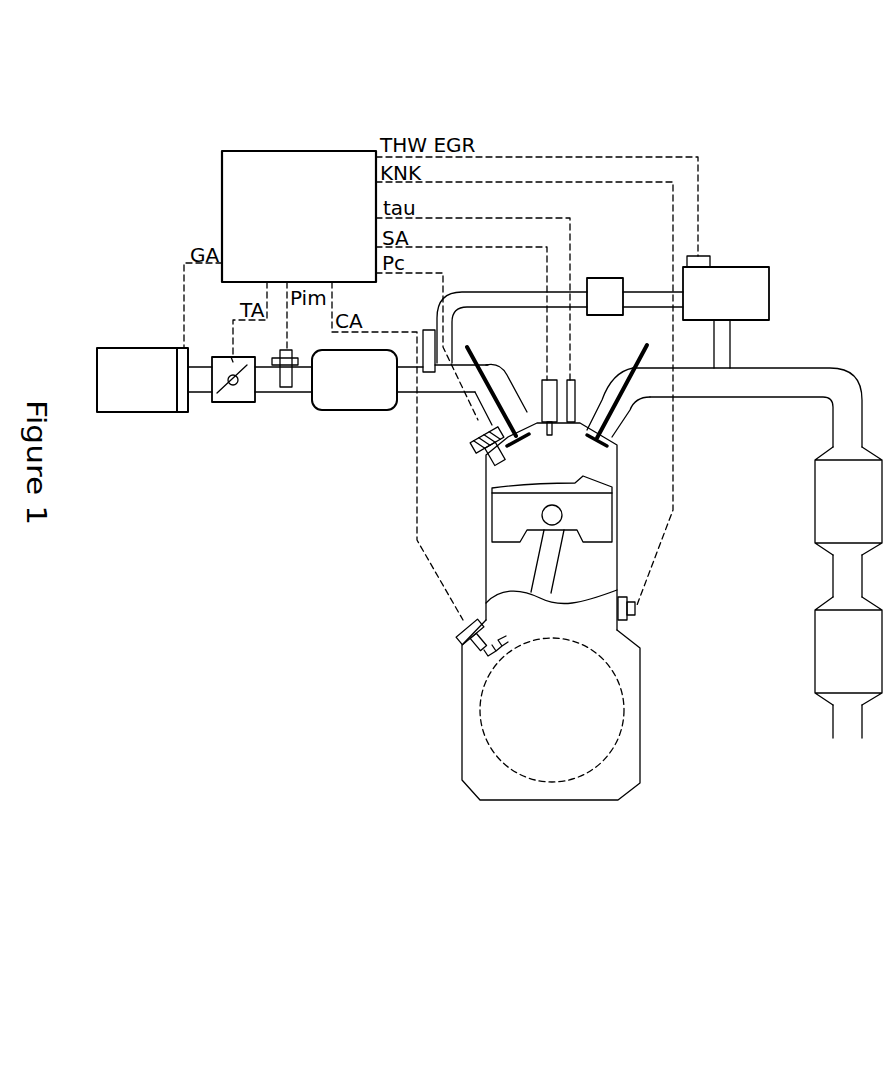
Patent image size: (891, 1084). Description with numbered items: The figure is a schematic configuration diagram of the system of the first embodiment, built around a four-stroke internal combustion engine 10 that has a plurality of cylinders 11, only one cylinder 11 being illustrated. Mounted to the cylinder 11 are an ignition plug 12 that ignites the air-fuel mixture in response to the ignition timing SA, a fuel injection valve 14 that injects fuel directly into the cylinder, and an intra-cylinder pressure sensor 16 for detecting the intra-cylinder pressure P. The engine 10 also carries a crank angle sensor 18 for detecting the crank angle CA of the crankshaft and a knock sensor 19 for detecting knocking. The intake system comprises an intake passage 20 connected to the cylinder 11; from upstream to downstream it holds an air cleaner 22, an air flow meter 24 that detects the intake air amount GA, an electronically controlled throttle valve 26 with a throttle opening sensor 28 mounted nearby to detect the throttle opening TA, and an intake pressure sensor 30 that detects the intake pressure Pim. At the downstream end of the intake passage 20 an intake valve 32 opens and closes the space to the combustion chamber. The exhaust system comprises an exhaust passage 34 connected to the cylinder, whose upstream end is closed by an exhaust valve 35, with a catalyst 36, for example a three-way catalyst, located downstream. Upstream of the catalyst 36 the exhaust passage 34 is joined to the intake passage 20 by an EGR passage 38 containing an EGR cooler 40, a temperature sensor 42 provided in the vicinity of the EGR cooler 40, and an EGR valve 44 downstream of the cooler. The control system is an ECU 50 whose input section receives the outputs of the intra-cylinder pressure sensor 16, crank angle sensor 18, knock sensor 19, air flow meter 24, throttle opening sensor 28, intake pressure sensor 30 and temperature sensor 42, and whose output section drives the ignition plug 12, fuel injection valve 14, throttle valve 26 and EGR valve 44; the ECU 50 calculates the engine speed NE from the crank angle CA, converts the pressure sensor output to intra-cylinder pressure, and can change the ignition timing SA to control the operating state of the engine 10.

The internal combustion engine 10 is at (412, 603).
The cylinder 11 is at (630, 470).
The ignition plug 12 is at (542, 400).
The fuel injection valve 14 is at (575, 395).
The intra-cylinder pressure sensor 16 is at (470, 447).
The crank angle sensor 18 is at (458, 642).
The knock sensor 19 is at (635, 610).
The intake passage 20 is at (408, 393).
The air cleaner 22 is at (143, 412).
The air flow meter 24 is at (183, 412).
The throttle valve 26 is at (235, 402).
The throttle opening sensor 28 is at (231, 357).
The intake pressure sensor 30 is at (285, 388).
The intake valve 32 is at (502, 372).
The exhaust passage 34 is at (708, 397).
The exhaust valve 35 is at (630, 407).
The catalyst 36 is at (825, 500).
The EGR passage 38 is at (655, 292).
The EGR cooler 40 is at (769, 293).
The temperature sensor 42 is at (700, 256).
The EGR valve 44 is at (610, 278).
The ECU 50 is at (297, 151).